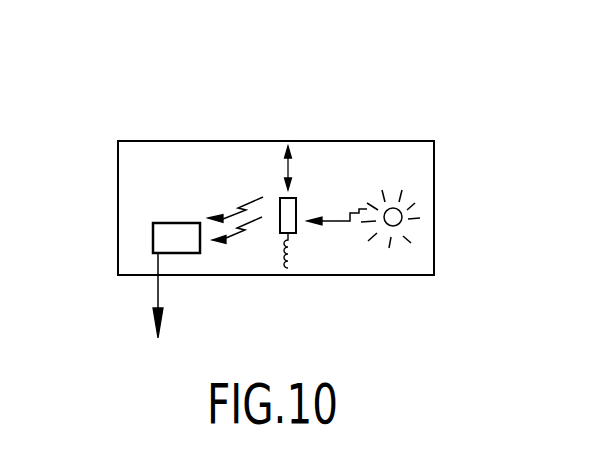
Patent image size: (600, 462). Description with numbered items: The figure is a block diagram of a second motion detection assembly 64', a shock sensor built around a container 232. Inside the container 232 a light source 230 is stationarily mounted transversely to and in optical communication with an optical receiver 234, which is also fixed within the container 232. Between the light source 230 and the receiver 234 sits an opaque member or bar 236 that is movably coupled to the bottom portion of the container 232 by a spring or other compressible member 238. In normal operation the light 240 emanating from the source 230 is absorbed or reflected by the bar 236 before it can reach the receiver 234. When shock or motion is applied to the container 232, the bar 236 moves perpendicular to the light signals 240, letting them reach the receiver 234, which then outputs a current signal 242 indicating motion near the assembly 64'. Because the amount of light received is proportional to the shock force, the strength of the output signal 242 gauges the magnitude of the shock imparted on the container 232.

The second motion detection assembly 64' is at (291, 184).
The container 232 is at (434, 172).
The opaque member or bar 236 is at (278, 199).
The spring or compressible member 238 is at (288, 268).
The optical receiver 234 is at (190, 253).
The current signal 242 is at (160, 293).
The light signals 240 is at (343, 222).
The light source 230 is at (393, 226).